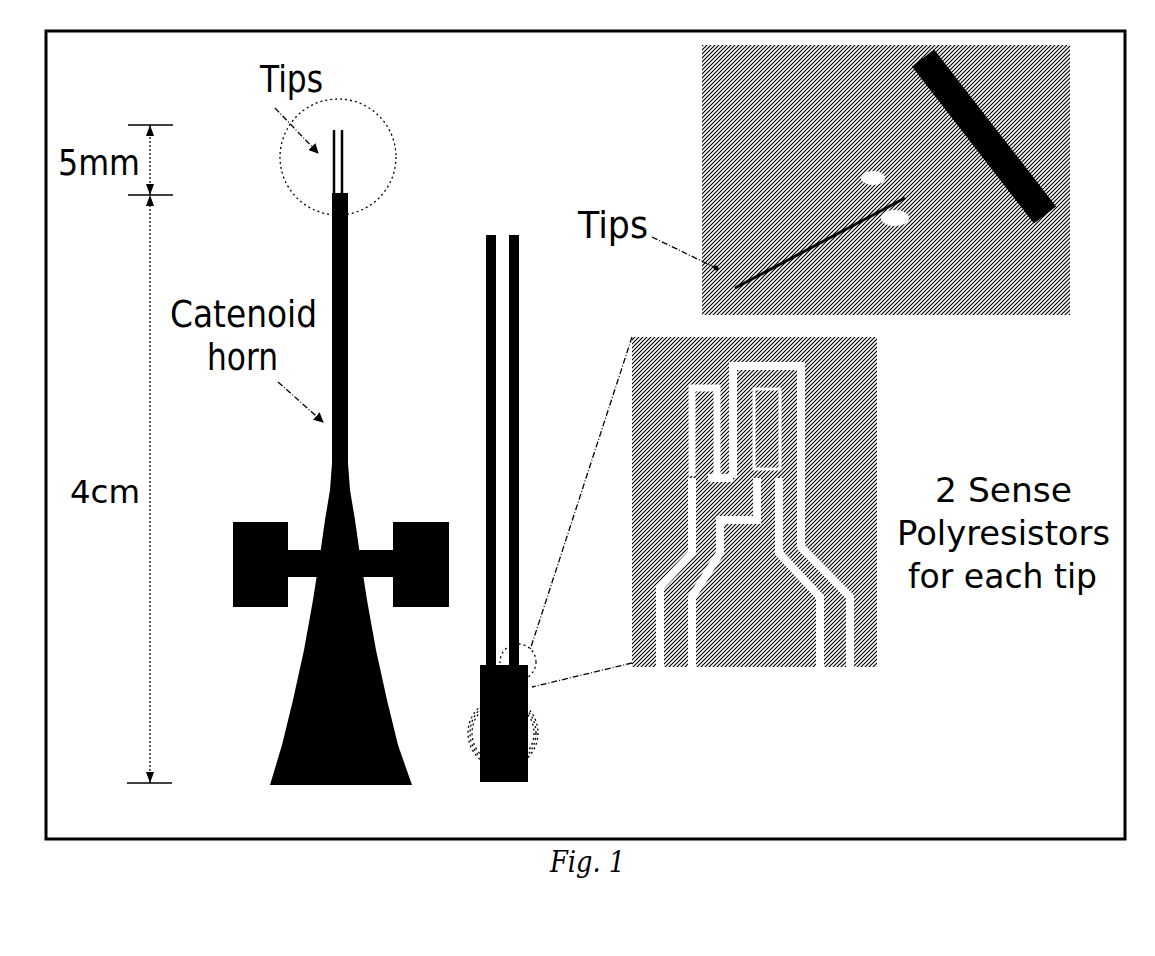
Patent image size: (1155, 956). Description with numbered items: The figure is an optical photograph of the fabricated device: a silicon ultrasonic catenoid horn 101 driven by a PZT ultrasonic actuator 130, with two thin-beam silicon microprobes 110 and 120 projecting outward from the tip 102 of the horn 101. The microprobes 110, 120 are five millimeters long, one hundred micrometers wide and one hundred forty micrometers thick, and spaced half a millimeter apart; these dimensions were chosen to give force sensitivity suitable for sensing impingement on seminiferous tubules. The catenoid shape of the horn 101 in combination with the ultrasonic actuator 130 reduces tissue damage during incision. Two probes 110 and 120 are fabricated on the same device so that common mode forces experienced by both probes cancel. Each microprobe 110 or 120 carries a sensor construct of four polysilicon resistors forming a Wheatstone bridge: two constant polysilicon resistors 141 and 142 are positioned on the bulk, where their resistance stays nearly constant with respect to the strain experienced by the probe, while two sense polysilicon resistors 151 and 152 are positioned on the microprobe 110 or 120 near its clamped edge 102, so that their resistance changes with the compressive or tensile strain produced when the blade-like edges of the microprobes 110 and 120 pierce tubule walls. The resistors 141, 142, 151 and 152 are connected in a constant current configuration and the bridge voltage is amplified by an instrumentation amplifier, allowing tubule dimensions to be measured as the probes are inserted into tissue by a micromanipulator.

The horn 101 is at (289, 748).
The tip of the horn 102 is at (349, 197).
The silicon microprobe 110 is at (474, 252).
The silicon microprobe 120 is at (530, 252).
The ultrasonic actuator 130 is at (745, 165).
The constant polysilicon resistor 141 is at (545, 733).
The constant polysilicon resistor 142 is at (732, 755).
The sense polysilicon resistor 151 is at (680, 398).
The sense polysilicon resistor 152 is at (787, 402).